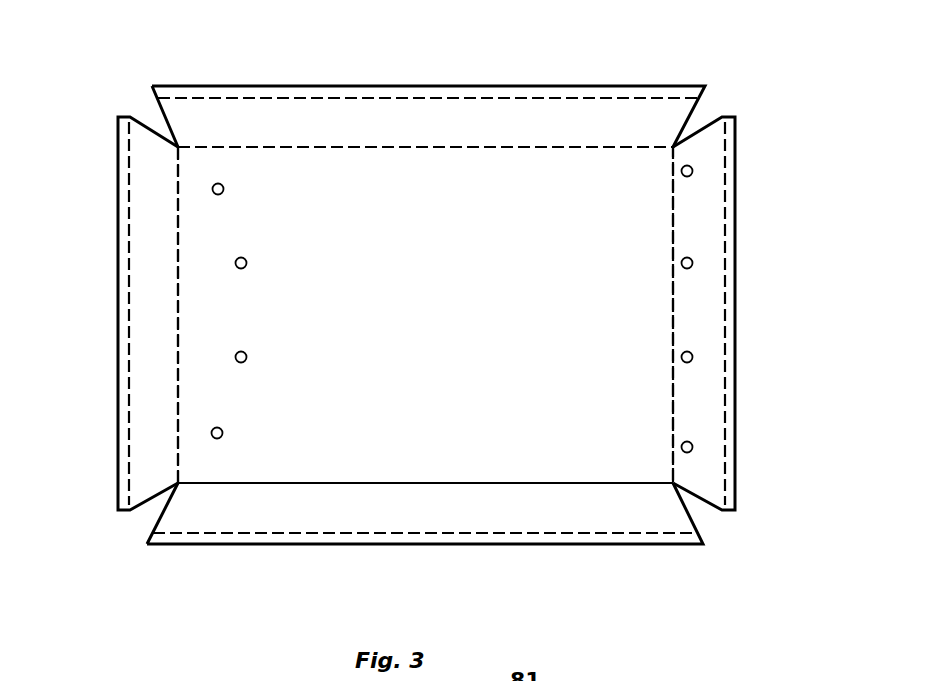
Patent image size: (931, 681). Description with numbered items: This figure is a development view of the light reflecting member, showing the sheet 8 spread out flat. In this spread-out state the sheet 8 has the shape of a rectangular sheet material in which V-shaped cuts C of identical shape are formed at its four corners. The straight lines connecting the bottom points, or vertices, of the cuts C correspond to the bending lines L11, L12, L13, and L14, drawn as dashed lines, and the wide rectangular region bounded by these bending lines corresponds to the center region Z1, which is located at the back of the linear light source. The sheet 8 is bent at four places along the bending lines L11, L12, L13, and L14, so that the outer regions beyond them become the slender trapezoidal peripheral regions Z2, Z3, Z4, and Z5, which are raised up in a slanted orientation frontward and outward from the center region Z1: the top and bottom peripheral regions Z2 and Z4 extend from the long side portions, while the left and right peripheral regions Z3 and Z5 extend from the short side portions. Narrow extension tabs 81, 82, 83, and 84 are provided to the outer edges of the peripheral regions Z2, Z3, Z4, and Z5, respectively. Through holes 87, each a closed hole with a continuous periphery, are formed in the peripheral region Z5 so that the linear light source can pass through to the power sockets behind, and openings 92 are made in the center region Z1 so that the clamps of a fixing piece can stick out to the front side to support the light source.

The sheet 8 is at (420, 304).
The extension tab 81 is at (478, 93).
The extension tab 82 is at (120, 338).
The extension tab 83 is at (458, 540).
The extension tab 84 is at (732, 253).
The through holes 87 is at (681, 263).
The openings 92 is at (224, 189).
The center region Z1 is at (433, 326).
The top peripheral region Z2 is at (360, 110).
The left peripheral region Z3 is at (135, 259).
The bottom peripheral region Z4 is at (366, 517).
The right peripheral region Z5 is at (710, 323).
The bending line L11 is at (410, 148).
The bending line L12 is at (180, 332).
The bending line L13 is at (402, 483).
The bending line L14 is at (672, 293).
The V-shaped cuts C is at (153, 111).